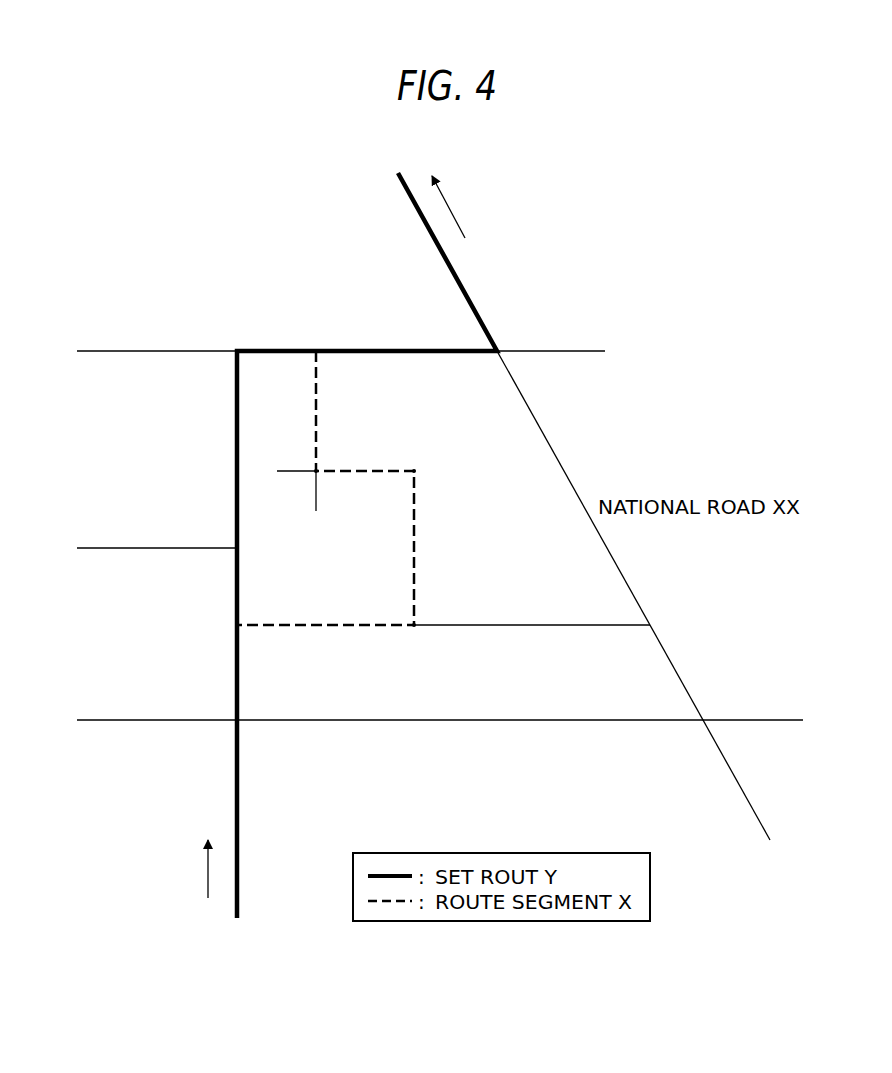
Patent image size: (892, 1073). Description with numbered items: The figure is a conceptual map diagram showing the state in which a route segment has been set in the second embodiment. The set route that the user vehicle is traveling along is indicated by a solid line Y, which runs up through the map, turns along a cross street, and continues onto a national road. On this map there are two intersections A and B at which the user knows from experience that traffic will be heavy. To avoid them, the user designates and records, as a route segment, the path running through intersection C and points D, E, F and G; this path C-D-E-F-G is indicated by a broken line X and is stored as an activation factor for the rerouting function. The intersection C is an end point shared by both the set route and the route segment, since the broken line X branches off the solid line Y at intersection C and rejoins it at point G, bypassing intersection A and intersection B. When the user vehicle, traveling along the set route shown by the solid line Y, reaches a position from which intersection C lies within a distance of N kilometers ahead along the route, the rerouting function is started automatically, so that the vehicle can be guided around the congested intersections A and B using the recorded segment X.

The intersection A is at (218, 532).
The intersection B is at (218, 336).
The intersection C is at (218, 614).
The point of route segment path D is at (427, 610).
The point of route segment path E is at (426, 480).
The point of route segment path F is at (328, 451).
The point of route segment path G is at (316, 336).
The broken line X is at (418, 546).
The solid line Y is at (240, 812).